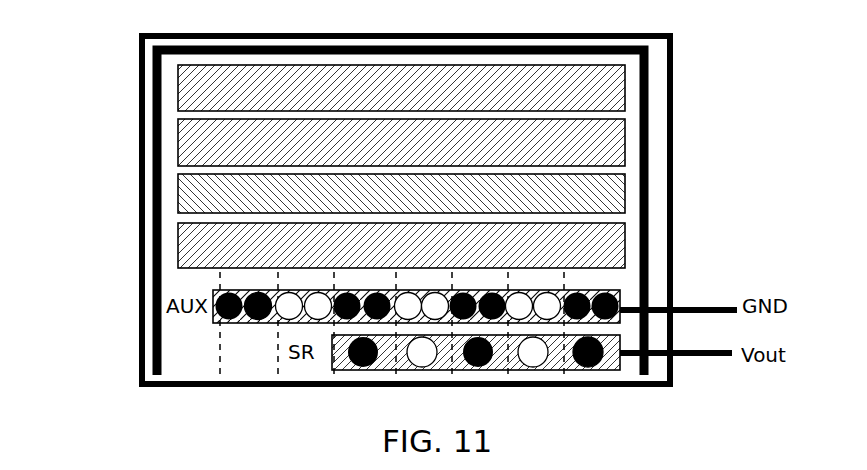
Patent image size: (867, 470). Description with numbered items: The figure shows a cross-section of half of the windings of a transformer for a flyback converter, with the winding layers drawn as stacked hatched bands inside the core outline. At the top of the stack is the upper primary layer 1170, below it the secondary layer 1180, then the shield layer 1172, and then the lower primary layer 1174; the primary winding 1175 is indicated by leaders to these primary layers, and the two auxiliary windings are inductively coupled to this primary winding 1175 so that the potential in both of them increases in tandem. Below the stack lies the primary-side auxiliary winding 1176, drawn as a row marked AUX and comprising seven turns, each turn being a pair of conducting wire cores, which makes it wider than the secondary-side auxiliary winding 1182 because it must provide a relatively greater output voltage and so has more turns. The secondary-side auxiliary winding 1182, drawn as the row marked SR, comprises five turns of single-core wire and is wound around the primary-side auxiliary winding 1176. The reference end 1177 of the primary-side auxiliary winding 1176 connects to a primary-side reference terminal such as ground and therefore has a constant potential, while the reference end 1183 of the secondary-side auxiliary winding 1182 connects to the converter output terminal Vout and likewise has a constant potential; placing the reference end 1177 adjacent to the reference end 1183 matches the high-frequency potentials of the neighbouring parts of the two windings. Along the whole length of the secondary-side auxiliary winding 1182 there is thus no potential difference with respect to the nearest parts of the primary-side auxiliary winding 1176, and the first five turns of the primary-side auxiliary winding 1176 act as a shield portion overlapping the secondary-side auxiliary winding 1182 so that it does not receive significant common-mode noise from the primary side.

The primary winding 1170 is at (615, 88).
The secondary winding 1180 is at (615, 140).
The shield 1172 is at (618, 192).
The primary winding 1174 is at (618, 242).
The primary winding 1175 is at (188, 245).
The primary-side auxiliary winding 1176 is at (273, 318).
The reference end of the primary-side auxiliary winding 1177 is at (622, 298).
The secondary-side auxiliary winding 1182 is at (445, 358).
The reference end of the secondary-side auxiliary winding 1183 is at (612, 360).